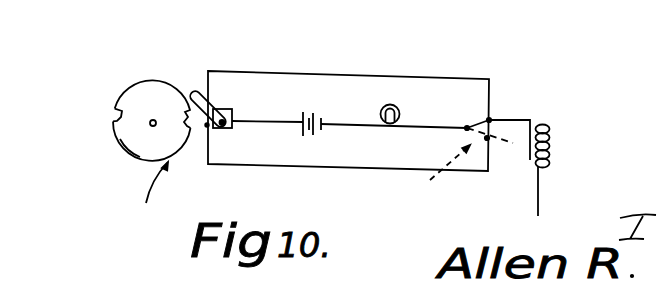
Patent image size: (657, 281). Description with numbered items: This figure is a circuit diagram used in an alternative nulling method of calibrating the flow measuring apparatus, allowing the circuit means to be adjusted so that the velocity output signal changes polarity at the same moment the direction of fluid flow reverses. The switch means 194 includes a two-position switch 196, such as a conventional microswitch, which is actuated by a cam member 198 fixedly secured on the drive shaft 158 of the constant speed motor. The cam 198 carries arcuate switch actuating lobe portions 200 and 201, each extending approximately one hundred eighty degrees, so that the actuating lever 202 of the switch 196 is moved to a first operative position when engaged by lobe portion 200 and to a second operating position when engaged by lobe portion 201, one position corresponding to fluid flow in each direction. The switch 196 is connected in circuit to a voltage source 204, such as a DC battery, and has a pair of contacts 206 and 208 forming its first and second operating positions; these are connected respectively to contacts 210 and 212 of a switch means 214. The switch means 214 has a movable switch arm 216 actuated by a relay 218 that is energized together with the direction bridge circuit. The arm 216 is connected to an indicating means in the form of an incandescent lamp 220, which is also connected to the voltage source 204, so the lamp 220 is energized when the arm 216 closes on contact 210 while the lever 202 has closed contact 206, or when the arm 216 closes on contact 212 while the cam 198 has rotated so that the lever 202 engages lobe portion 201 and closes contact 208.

The drive shaft 158 is at (150, 123).
The switch means 194 is at (93, 220).
The two-position switch 196 is at (233, 112).
The cam member 198 is at (140, 102).
The switch actuating lobe portion 200 is at (152, 81).
The switch actuating lobe portion 201 is at (130, 150).
The actuating lever 202 is at (196, 93).
The voltage source 204 is at (300, 131).
The contact 206 is at (215, 104).
The contact 208 is at (207, 126).
The contact 210 is at (490, 118).
The contact 212 is at (487, 139).
The switch means 214 is at (430, 175).
The movable switch arm 216 is at (493, 117).
The relay 218 is at (541, 164).
The incandescent lamp 220 is at (397, 105).